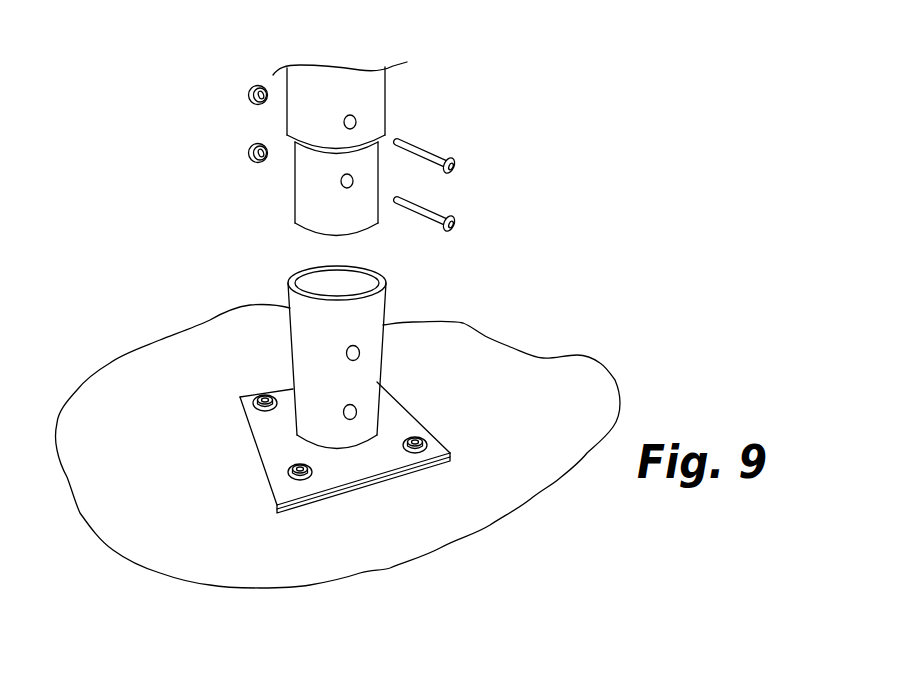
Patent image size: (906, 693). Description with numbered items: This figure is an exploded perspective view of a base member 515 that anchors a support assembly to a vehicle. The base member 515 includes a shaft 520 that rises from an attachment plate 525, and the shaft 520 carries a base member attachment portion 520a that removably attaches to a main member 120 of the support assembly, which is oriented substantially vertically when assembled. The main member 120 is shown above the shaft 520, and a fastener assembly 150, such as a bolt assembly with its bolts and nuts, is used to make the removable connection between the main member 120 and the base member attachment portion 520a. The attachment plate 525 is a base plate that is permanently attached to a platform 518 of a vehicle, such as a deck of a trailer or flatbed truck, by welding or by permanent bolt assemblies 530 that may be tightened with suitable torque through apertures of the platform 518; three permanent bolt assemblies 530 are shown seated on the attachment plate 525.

The main member 120 is at (353, 88).
The fastener assembly 150 is at (476, 153).
The base member 515 is at (377, 434).
The platform 518 is at (593, 393).
The shaft 520 is at (372, 313).
The base member attachment portion 520a is at (363, 377).
The attachment plate 525 is at (241, 451).
The permanent bolt assembly 530 is at (244, 390).